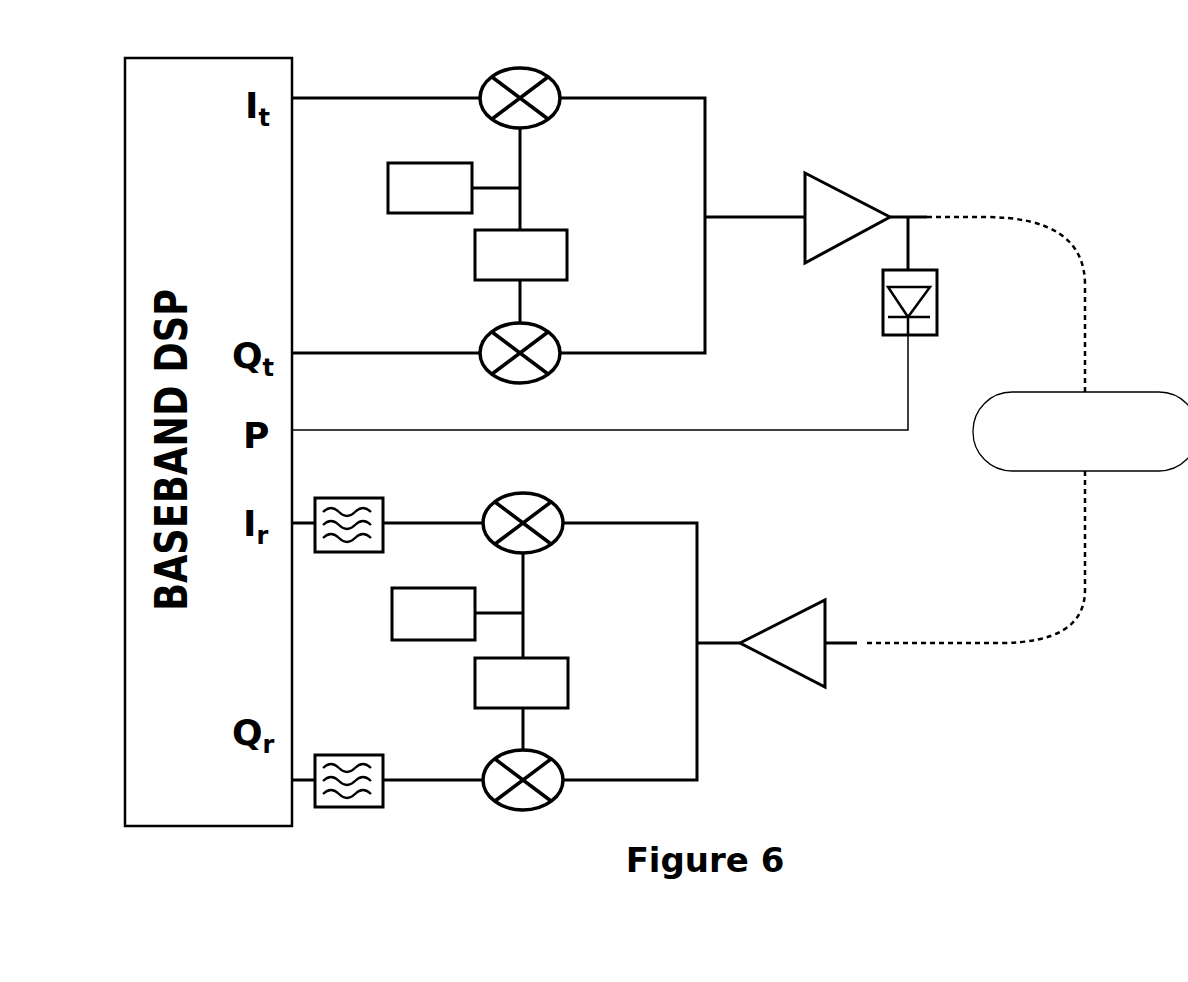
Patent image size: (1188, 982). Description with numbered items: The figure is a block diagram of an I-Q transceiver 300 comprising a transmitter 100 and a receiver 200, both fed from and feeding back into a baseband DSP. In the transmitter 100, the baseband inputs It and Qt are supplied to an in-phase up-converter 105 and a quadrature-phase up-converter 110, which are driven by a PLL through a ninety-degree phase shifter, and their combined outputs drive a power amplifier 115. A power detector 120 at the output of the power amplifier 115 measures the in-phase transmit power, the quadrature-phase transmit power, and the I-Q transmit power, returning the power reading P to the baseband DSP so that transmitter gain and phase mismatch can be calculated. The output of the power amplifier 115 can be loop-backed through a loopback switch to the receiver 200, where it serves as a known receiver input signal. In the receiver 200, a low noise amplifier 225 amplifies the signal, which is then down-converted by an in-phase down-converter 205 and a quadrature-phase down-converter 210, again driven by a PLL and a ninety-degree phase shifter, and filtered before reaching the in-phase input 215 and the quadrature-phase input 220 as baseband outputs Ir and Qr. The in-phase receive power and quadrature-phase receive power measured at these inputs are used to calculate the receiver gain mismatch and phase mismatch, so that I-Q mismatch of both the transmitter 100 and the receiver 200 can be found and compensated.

The transmitter 100 is at (783, 156).
The in-phase up-converter 105 is at (552, 82).
The quadrature-phase up-converter 110 is at (548, 370).
The power amplifier 115 is at (865, 205).
The power detector 120 is at (908, 340).
The receiver 200 is at (772, 718).
The in-phase down-converter 205 is at (555, 503).
The quadrature-phase down-converter 210 is at (548, 784).
The in-phase input 215 is at (295, 520).
The quadrature-phase input 220 is at (294, 785).
The low noise amplifier 225 is at (820, 690).
The transceiver 300 is at (1060, 166).